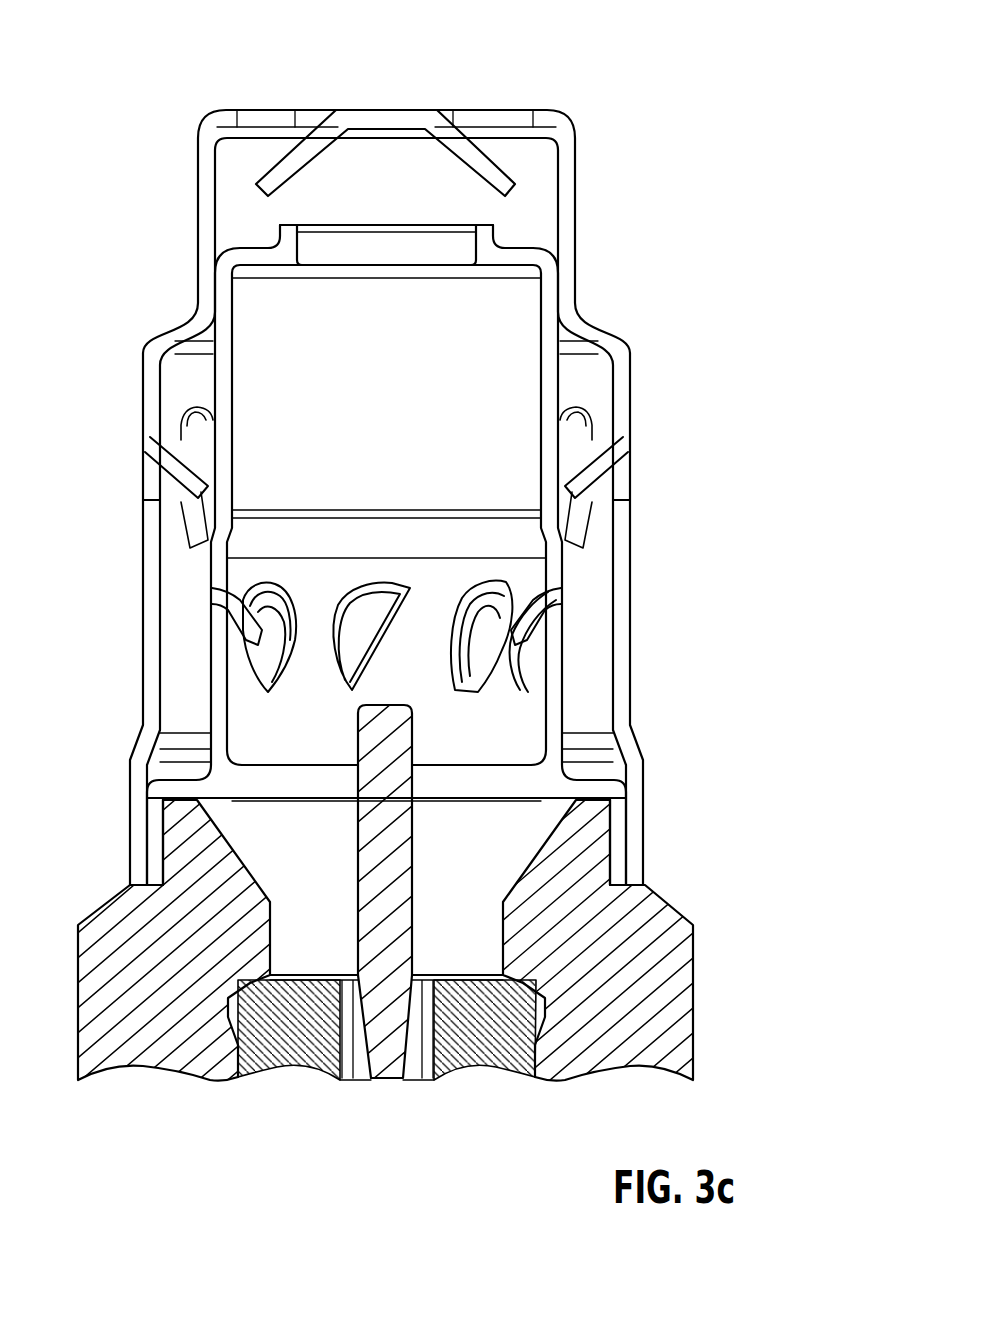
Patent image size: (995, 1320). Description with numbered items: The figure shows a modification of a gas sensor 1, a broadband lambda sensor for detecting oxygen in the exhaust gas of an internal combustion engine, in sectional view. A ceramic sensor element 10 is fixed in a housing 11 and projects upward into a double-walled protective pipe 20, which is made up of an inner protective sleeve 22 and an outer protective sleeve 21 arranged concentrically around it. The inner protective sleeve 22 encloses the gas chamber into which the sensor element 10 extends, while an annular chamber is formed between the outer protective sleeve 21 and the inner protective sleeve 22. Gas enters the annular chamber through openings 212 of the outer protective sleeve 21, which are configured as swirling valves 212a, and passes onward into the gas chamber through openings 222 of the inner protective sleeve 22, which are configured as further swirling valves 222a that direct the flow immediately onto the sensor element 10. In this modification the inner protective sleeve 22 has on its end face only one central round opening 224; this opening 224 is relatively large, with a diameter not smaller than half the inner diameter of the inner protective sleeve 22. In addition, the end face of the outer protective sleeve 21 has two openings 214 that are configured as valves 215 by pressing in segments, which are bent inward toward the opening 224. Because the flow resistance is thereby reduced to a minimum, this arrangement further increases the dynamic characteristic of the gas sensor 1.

The gas sensor 1 is at (411, 680).
The sensor element 10 is at (385, 1067).
The housing 11 is at (670, 967).
The double-walled protective pipe 20 is at (398, 463).
The outer protective sleeve 21 is at (620, 650).
The inner protective sleeve 22 is at (553, 716).
The openings of outer protective sleeve 212 is at (620, 483).
The swirling valves of outer protective sleeve 212a is at (612, 439).
The openings 214 is at (268, 113).
The valves 215 is at (279, 166).
The openings of inner protective pipe 222 is at (219, 625).
The further swirling valves 222a is at (212, 595).
The central round opening 224 is at (312, 242).